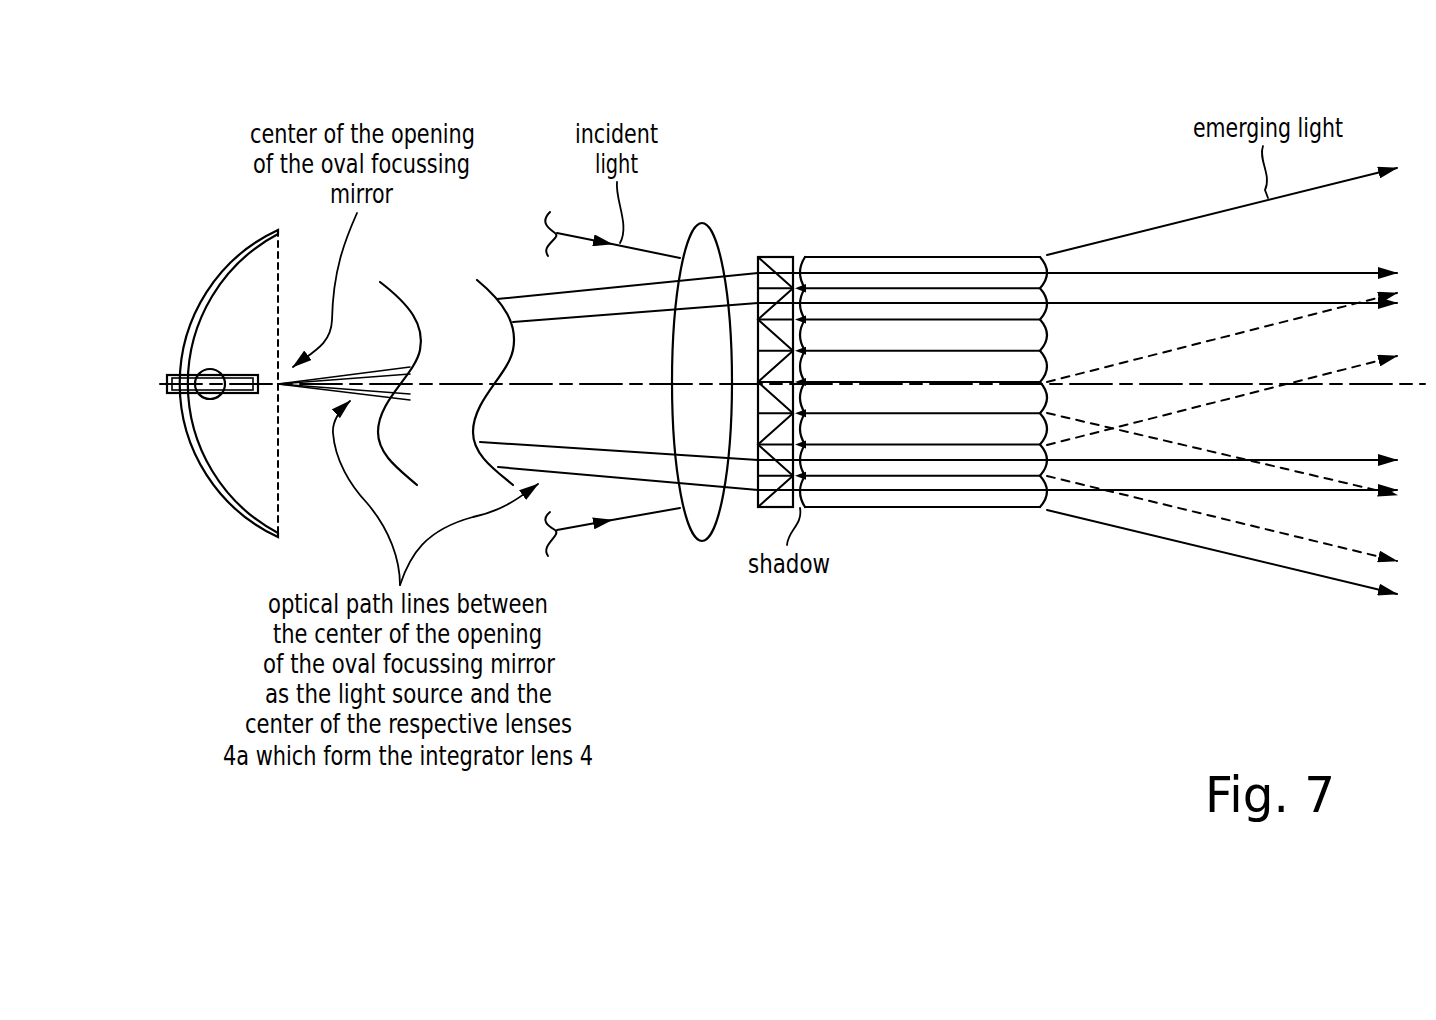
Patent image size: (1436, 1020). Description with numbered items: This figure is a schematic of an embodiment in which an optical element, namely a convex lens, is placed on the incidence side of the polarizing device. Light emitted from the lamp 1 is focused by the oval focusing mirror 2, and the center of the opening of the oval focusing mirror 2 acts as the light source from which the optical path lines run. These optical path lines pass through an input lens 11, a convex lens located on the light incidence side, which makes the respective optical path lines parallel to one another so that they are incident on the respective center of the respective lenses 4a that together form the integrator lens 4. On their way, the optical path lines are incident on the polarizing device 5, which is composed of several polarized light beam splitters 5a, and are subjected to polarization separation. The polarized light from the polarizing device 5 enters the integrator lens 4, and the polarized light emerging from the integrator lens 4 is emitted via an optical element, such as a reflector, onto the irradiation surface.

The lamp 1 is at (207, 399).
The oval focusing mirror 2 is at (222, 276).
The integrator lens 4 is at (1000, 256).
The lenses comprising the integrator lens 4a is at (995, 497).
The polarizing device 5 is at (750, 263).
The polarized light beam splitters 5a is at (785, 262).
The input lens 11 is at (712, 540).